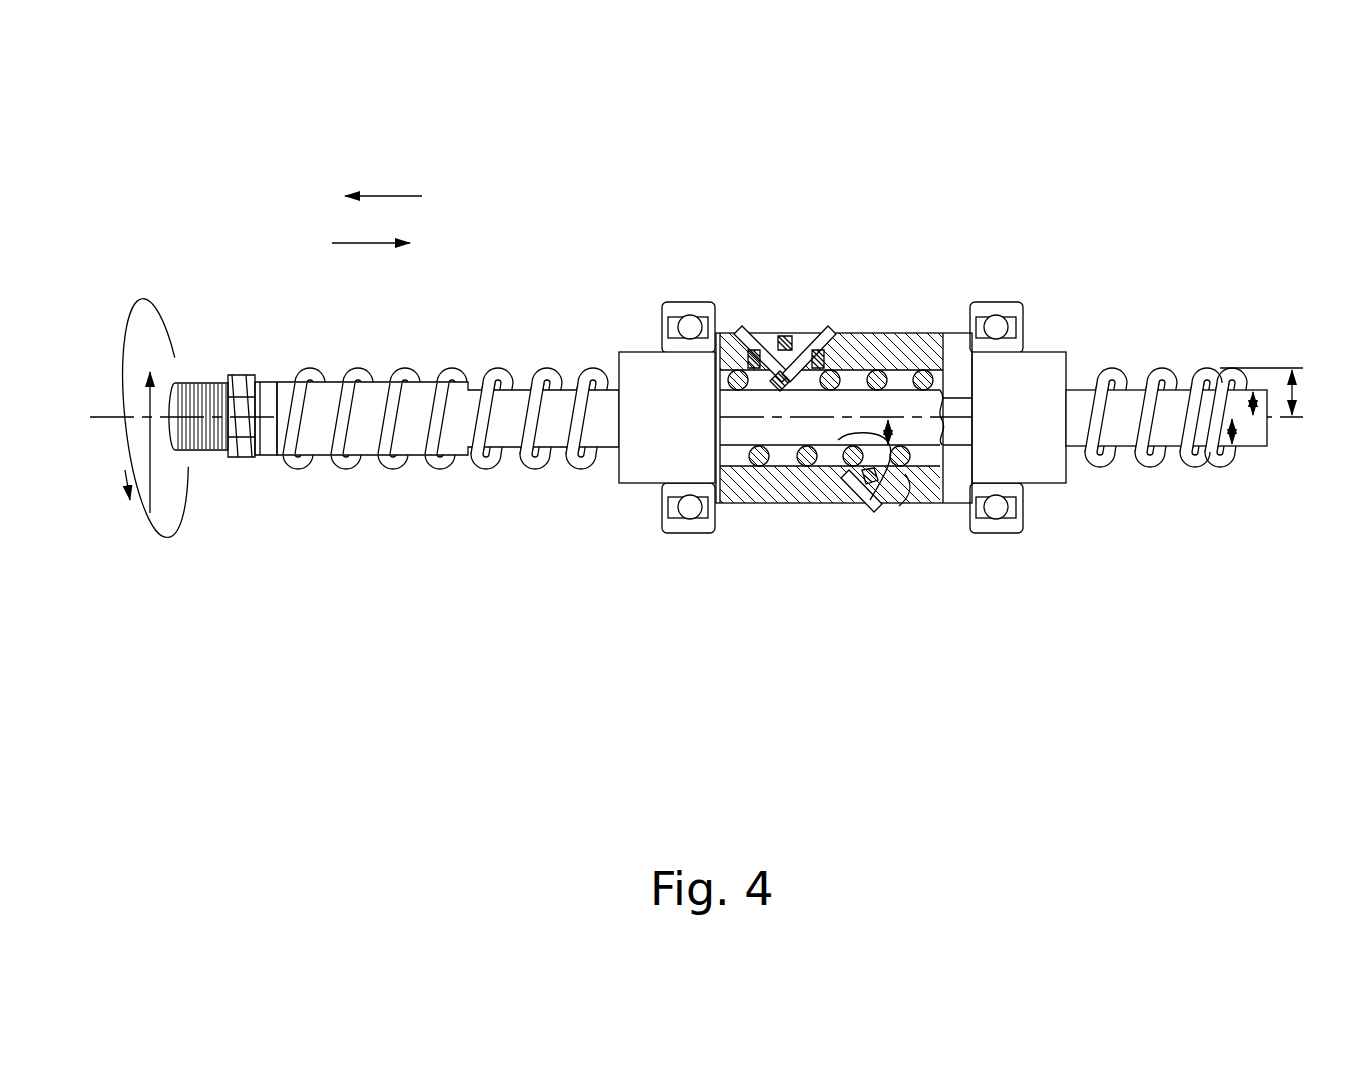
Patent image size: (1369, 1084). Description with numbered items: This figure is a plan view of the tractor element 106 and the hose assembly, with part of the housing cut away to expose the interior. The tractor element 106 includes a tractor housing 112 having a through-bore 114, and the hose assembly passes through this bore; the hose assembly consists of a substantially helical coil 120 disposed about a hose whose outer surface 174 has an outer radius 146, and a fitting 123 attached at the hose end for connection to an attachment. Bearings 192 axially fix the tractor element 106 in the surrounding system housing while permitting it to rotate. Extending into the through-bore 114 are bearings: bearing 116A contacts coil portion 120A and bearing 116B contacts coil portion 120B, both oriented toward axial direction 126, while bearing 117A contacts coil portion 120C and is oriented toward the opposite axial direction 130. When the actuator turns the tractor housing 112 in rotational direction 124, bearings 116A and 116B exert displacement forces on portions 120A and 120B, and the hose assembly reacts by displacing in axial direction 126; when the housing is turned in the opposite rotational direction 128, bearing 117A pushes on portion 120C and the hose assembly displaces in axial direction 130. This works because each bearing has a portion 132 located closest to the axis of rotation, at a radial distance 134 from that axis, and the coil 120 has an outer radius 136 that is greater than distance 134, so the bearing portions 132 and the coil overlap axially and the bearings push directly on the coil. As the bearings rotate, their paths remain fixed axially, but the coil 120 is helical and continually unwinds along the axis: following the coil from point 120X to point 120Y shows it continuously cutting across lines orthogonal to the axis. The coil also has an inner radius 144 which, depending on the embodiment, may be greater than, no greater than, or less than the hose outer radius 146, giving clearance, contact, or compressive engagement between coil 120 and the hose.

The tractor element 106 is at (809, 406).
The tractor housing 112 is at (782, 468).
The through-bore 114 is at (740, 480).
The bearing 116A is at (745, 330).
The bearing 116B is at (868, 516).
The bearing 117A is at (816, 330).
The substantially helical coil 120 is at (1141, 470).
The portion of the coil 120A is at (728, 333).
The portion of the coil 120B is at (925, 503).
The portion of the coil 120C is at (822, 326).
The point on the coil 120X is at (722, 390).
The point on the coil 120Y is at (923, 369).
The fitting 123 is at (358, 476).
The rotational direction 124 is at (120, 373).
The axial direction 126 is at (365, 243).
The rotational direction 128 is at (153, 507).
The axial direction 130 is at (373, 196).
The portion of the bearing 132 is at (893, 495).
The radial distance 134 is at (845, 438).
The outer radius of the coil 136 is at (1293, 392).
The inner radius of the coil 144 is at (1238, 441).
The outer radius of the hose 146 is at (1250, 392).
The outer surface of the hose 174 is at (1166, 409).
The bearings 192 is at (683, 300).